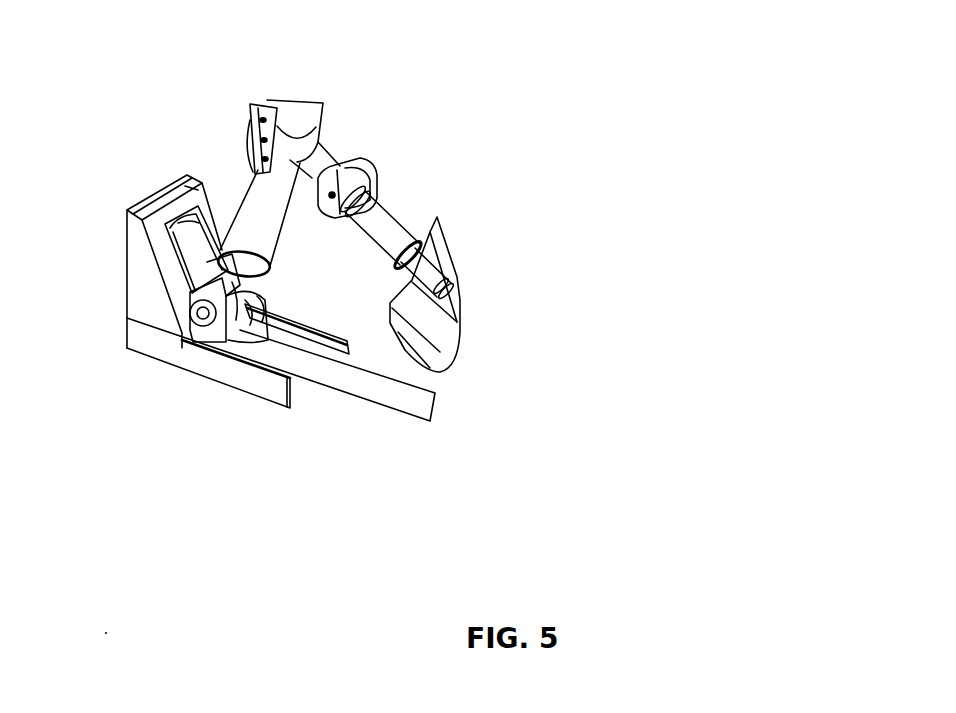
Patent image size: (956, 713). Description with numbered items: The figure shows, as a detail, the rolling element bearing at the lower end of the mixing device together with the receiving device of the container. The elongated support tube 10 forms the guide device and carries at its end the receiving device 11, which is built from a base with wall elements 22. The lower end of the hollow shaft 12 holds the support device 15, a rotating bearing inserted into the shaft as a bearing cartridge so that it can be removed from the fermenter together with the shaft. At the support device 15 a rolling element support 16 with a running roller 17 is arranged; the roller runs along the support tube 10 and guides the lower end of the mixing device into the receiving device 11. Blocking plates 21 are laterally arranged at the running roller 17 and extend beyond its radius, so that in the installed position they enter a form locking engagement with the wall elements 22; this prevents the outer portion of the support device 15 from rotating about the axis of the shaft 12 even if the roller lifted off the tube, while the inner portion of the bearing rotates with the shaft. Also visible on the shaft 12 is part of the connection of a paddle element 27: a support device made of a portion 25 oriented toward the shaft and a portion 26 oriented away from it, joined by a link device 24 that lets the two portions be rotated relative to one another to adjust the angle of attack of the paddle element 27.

The support tube 10 is at (372, 383).
The receiving device 11 is at (117, 208).
The shaft 12 is at (302, 110).
The support device 15 is at (286, 298).
The rolling element support 16 is at (431, 332).
The running roller 17 is at (267, 272).
The blocking plates 21 is at (205, 336).
The wall elements 22 is at (332, 343).
The link device 24 is at (355, 165).
The portion oriented towards the shaft 25 is at (317, 155).
The portion oriented away from the shaft 26 is at (388, 217).
The paddle element 27 is at (458, 296).